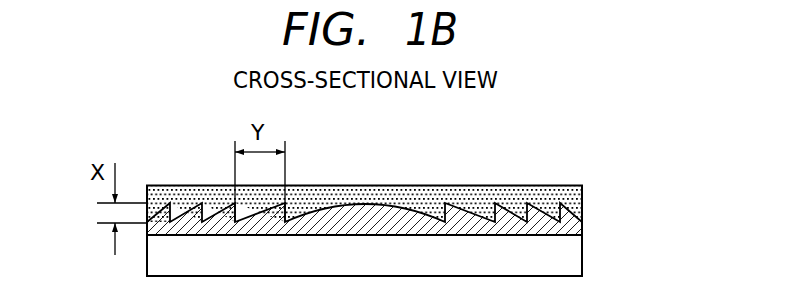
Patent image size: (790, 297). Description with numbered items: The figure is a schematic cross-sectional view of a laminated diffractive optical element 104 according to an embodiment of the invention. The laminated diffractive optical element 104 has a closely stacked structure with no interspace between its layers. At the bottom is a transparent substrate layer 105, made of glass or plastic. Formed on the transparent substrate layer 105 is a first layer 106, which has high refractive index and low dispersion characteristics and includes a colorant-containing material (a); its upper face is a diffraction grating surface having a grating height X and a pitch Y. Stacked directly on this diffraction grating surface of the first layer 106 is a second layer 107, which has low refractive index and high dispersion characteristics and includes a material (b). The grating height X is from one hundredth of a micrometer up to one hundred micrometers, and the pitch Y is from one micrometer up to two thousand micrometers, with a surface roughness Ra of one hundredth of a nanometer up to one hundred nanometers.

The laminated diffractive optical element 104 is at (75, 185).
The transparent substrate layer 105 is at (572, 257).
The first layer 106 is at (582, 195).
The second layer 107 is at (572, 230).